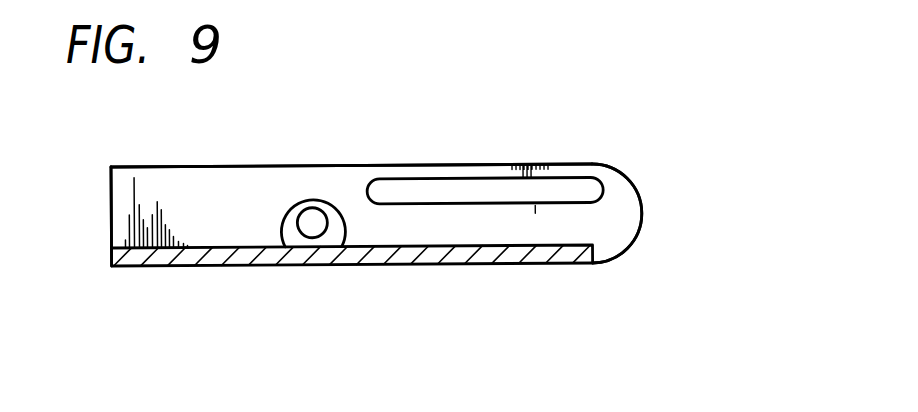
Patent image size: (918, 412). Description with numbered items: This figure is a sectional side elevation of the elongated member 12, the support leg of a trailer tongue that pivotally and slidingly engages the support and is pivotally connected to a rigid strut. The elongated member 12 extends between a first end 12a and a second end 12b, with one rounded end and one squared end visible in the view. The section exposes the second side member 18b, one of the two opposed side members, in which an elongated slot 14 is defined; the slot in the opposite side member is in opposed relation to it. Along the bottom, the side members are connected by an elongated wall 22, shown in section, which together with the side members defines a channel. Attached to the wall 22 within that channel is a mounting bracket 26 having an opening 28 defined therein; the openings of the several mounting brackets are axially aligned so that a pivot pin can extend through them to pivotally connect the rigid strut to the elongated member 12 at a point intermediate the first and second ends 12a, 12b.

The elongated member 12 is at (670, 160).
The first end of elongated member 12a is at (618, 234).
The second end of elongated member 12b is at (127, 217).
The second side member 18b is at (198, 178).
The elongated slot 14 is at (525, 192).
The elongated wall 22 is at (175, 257).
The mounting bracket 26 is at (335, 229).
The opening of mounting bracket 28 is at (312, 221).